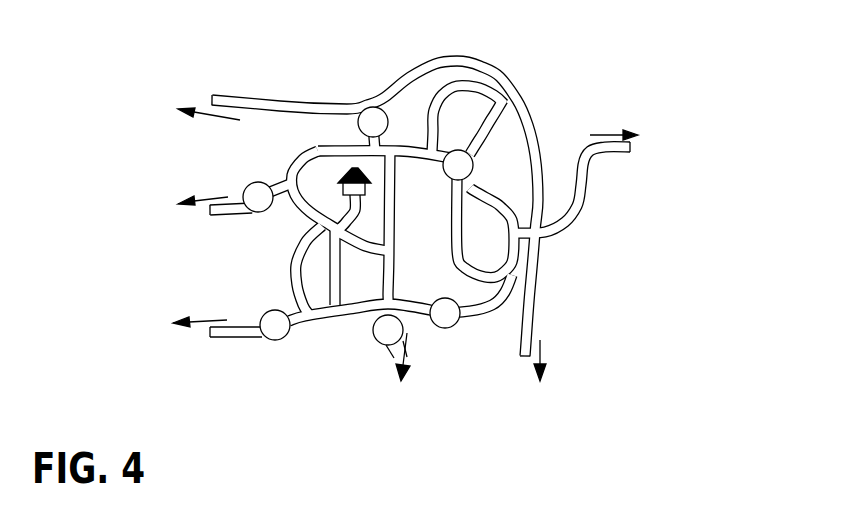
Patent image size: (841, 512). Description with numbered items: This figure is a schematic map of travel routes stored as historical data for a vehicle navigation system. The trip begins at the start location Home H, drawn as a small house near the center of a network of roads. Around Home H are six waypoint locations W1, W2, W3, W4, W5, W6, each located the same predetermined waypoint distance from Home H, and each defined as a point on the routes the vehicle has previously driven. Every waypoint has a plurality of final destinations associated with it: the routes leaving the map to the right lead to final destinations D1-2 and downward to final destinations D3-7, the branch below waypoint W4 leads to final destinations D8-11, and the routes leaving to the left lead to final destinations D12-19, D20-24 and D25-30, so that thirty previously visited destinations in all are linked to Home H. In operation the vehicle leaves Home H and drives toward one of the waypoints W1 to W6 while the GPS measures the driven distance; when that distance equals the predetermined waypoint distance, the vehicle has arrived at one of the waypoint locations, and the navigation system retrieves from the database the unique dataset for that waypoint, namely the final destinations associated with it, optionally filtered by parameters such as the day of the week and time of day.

The waypoint location W1 is at (373, 122).
The waypoint location W2 is at (458, 165).
The waypoint location W3 is at (445, 313).
The waypoint location W4 is at (388, 330).
The waypoint location W5 is at (275, 325).
The waypoint location W6 is at (258, 197).
The Home H is at (358, 188).
The final destinations D1-2 is at (631, 129).
The final destinations D3-7 is at (526, 373).
The final destinations D8-11 is at (391, 369).
The final destinations D12-19 is at (175, 312).
The final destinations D20-24 is at (175, 193).
The final destinations D25-30 is at (181, 98).